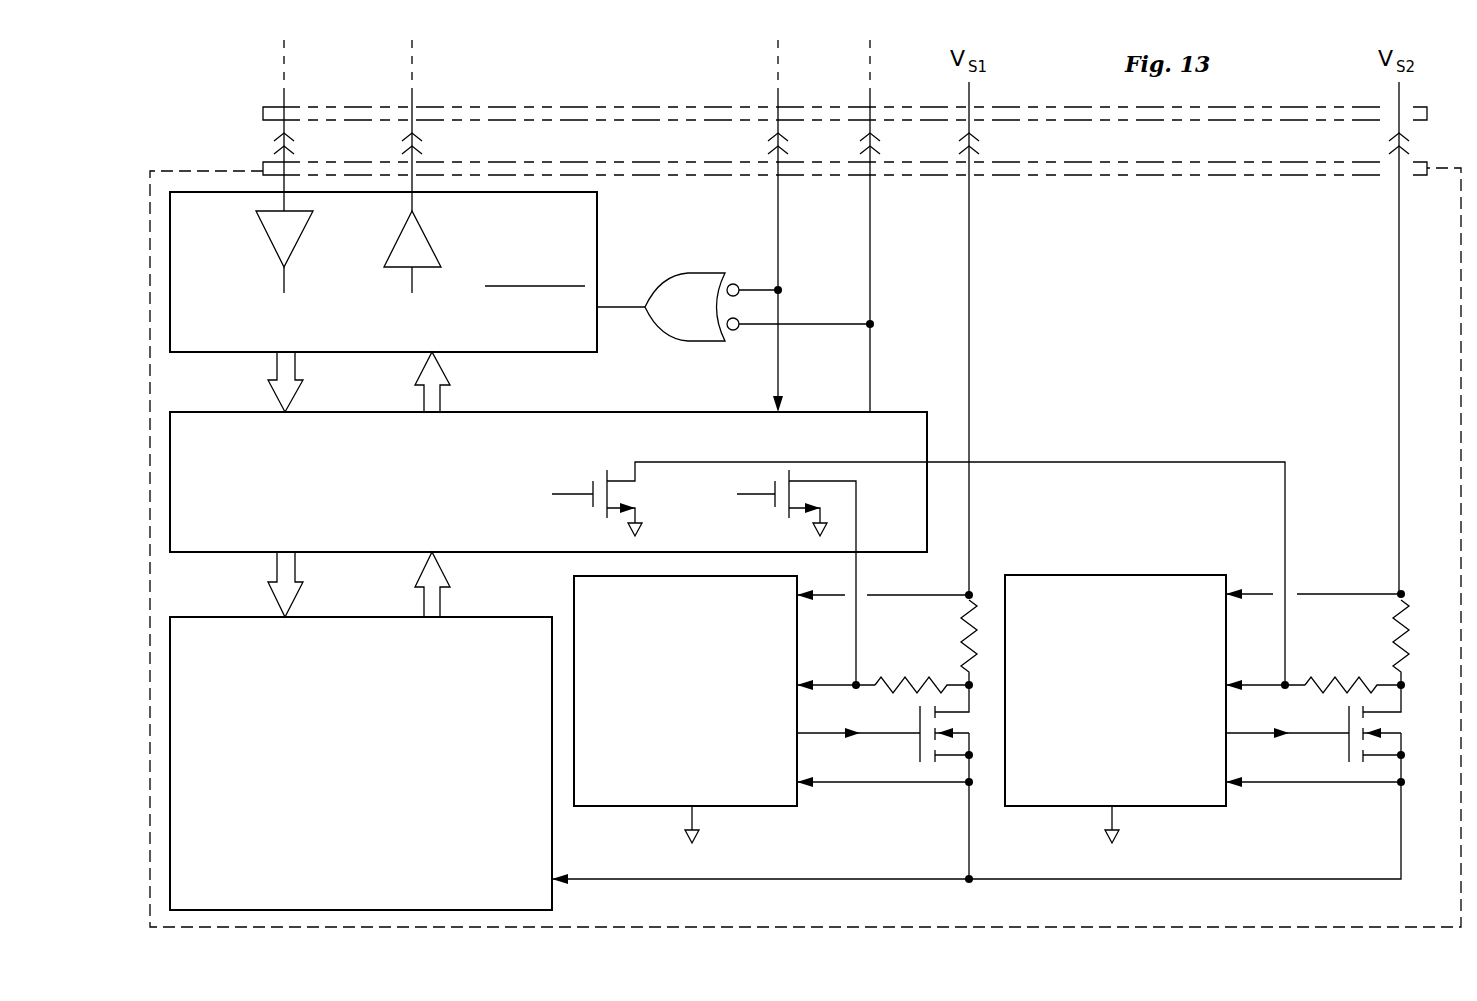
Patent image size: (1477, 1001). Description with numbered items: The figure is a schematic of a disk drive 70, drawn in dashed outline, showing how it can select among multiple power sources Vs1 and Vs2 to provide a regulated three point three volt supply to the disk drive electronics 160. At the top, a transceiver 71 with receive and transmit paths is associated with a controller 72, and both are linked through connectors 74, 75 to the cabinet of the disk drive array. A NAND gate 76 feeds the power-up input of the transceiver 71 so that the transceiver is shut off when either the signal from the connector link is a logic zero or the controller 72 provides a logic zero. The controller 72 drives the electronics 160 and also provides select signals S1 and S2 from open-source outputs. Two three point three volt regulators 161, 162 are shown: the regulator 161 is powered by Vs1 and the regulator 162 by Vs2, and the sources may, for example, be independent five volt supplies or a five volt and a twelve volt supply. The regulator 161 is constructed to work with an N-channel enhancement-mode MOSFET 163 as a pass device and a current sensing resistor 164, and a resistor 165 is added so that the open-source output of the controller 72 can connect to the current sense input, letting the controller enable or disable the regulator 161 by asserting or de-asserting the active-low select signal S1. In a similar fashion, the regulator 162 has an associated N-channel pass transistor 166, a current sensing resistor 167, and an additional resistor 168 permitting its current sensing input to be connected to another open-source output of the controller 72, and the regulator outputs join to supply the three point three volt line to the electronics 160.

The disk drive 70 is at (230, 168).
The transceiver 71 is at (600, 235).
The controller 72 is at (632, 421).
The connector 74 is at (1427, 113).
The connector 75 is at (1427, 168).
The NAND gate 76 is at (709, 271).
The disk drive electronics 160 is at (466, 617).
The 3.3 volt regulator 161 is at (622, 806).
The 3.3 volt regulator 162 is at (1033, 806).
The N-channel enhancement-mode MOSFET 163 is at (918, 752).
The current sensing resistor 164 is at (963, 632).
The resistor 165 is at (910, 681).
The N-channel pass transistor 166 is at (1347, 752).
The current sensing resistor 167 is at (1393, 632).
The resistor 168 is at (1340, 681).